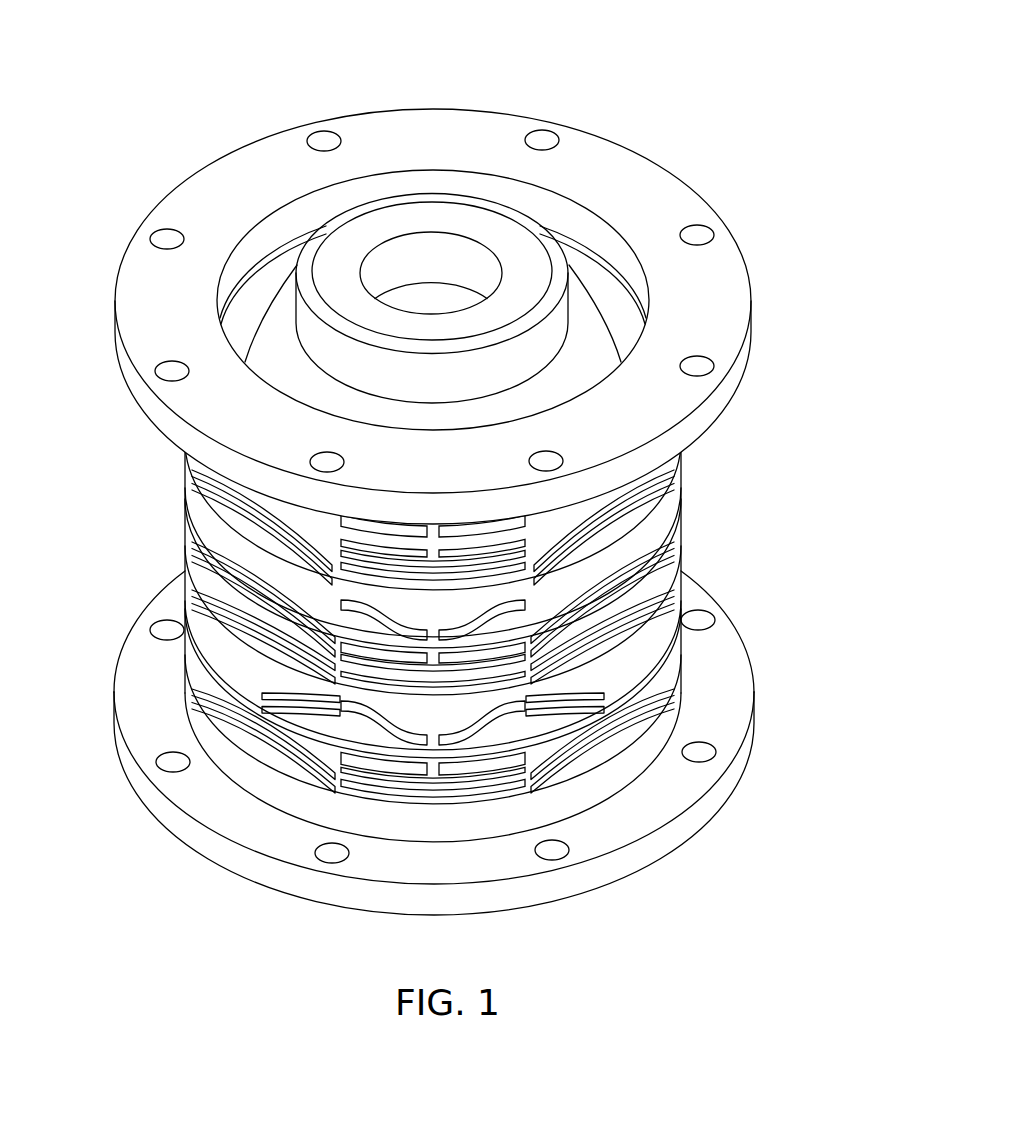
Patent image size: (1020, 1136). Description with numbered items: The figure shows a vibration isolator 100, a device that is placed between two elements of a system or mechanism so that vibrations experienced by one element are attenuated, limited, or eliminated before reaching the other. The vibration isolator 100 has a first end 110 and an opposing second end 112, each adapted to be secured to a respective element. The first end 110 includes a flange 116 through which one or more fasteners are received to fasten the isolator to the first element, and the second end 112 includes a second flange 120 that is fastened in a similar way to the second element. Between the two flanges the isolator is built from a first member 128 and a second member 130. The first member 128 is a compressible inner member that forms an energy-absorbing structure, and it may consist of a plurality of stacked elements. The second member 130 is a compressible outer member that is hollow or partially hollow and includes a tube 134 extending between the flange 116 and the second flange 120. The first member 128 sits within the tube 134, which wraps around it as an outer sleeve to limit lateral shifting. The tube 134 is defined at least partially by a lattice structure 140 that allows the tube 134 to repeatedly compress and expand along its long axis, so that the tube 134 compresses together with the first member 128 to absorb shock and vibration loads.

The vibration isolator 100 is at (631, 82).
The first end 110 is at (190, 848).
The second end 112 is at (137, 298).
The flange 116 is at (730, 693).
The second flange 120 is at (722, 272).
The first member 128 is at (318, 238).
The second member 130 is at (148, 422).
The tube 134 is at (185, 531).
The lattice structure 140 is at (660, 548).